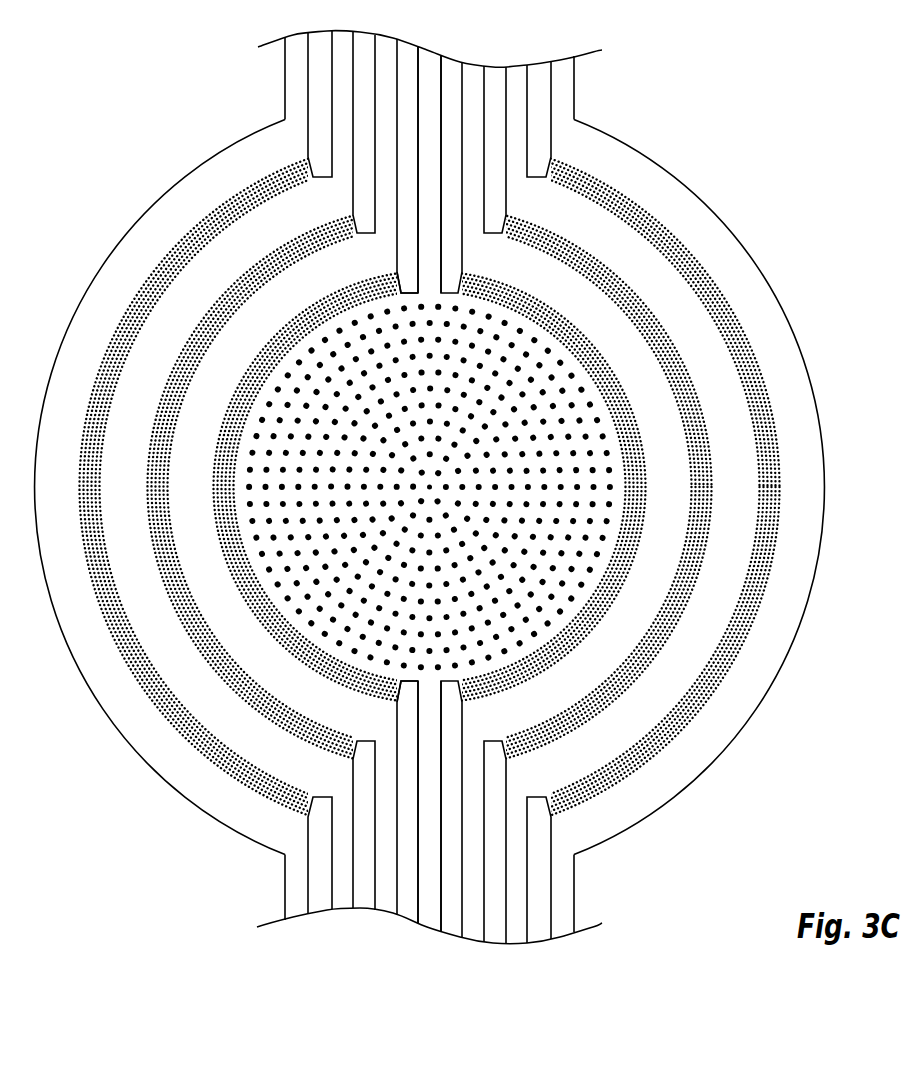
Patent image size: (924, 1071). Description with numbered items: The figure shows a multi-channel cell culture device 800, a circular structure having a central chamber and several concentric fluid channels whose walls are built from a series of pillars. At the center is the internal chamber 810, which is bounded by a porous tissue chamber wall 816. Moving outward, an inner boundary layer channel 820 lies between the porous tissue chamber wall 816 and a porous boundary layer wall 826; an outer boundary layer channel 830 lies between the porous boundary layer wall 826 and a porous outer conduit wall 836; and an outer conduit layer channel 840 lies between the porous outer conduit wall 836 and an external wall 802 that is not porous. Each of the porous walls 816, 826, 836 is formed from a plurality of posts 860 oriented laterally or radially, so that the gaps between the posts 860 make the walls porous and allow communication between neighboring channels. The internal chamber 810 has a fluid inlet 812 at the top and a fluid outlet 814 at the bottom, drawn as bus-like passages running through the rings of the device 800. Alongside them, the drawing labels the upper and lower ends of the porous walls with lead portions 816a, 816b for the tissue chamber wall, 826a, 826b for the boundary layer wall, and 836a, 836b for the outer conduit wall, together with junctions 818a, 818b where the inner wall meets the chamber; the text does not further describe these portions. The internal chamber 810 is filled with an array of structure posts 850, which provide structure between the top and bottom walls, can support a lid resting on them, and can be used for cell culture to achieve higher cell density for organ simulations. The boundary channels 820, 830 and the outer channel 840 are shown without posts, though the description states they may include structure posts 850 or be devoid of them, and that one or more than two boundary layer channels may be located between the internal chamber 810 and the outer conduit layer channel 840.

The multi-channel cell culture device 800 is at (822, 87).
The external wall 802 is at (827, 452).
The internal chamber 810 is at (478, 393).
The fluid inlet 812 is at (430, 130).
The fluid outlet 814 is at (430, 843).
The porous tissue chamber wall 816 is at (430, 487).
The inner ring electrode upper lead 816a is at (405, 167).
The inner ring electrode lower lead 816b is at (405, 825).
The upper lead connection 818a is at (392, 287).
The lower lead connection 818b is at (393, 693).
The inner boundary layer channel 820 is at (648, 379).
The porous boundary layer wall 826 is at (430, 487).
The middle ring electrode upper lead 826a is at (360, 117).
The middle ring electrode lower lead 826b is at (360, 858).
The outer boundary layer channel 830 is at (727, 405).
The porous outer conduit wall 836 is at (430, 487).
The outer ring electrode upper lead 836a is at (313, 80).
The outer ring electrode lower lead 836b is at (313, 893).
The outer conduit layer channel 840 is at (800, 437).
The structure posts 850 is at (480, 312).
The posts 860 is at (640, 492).